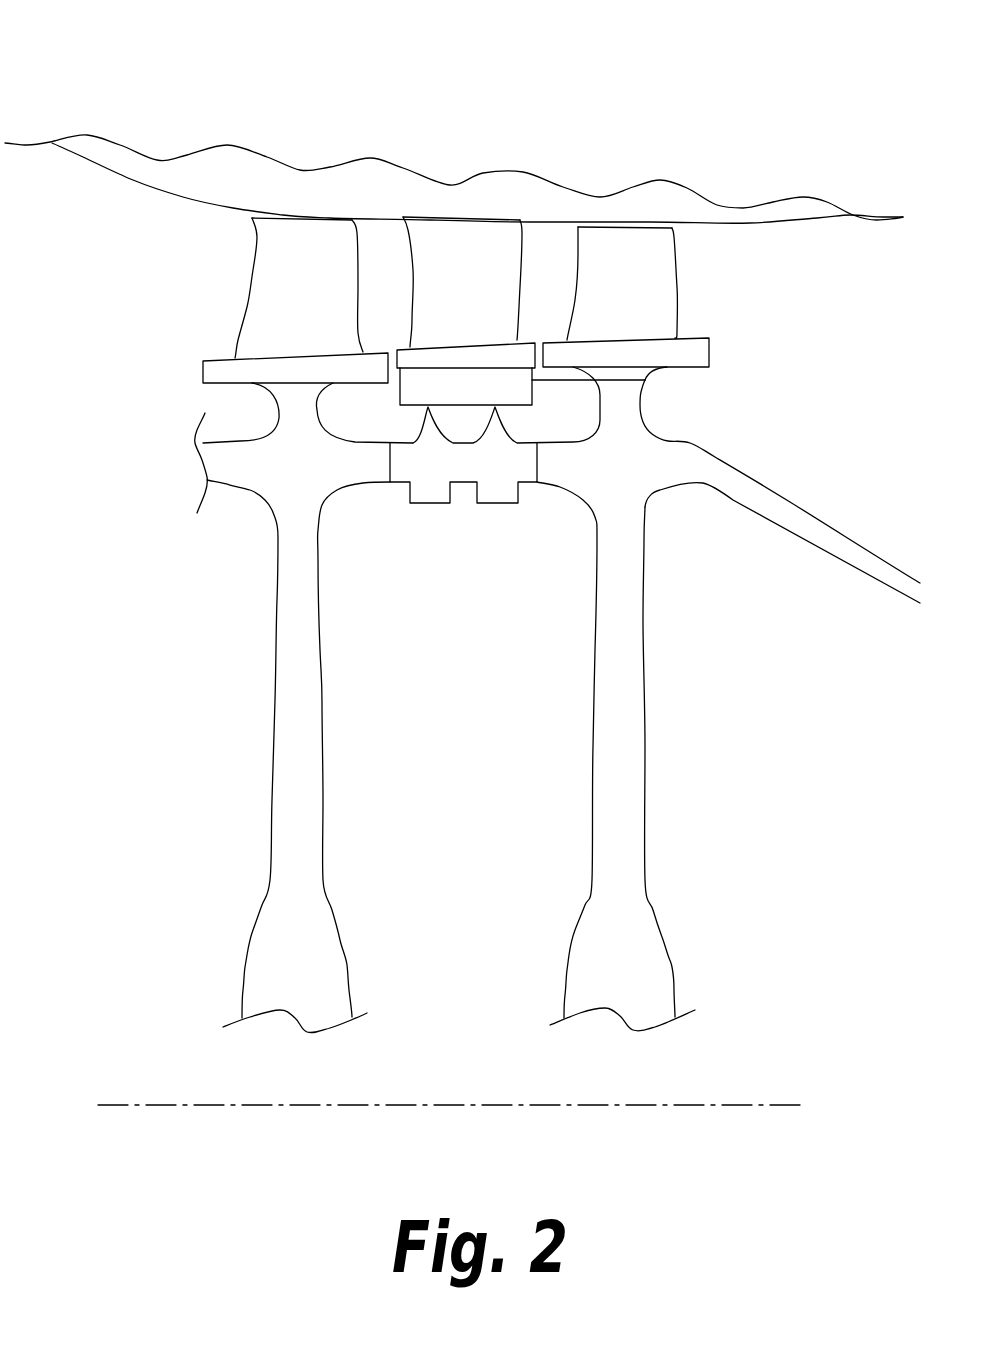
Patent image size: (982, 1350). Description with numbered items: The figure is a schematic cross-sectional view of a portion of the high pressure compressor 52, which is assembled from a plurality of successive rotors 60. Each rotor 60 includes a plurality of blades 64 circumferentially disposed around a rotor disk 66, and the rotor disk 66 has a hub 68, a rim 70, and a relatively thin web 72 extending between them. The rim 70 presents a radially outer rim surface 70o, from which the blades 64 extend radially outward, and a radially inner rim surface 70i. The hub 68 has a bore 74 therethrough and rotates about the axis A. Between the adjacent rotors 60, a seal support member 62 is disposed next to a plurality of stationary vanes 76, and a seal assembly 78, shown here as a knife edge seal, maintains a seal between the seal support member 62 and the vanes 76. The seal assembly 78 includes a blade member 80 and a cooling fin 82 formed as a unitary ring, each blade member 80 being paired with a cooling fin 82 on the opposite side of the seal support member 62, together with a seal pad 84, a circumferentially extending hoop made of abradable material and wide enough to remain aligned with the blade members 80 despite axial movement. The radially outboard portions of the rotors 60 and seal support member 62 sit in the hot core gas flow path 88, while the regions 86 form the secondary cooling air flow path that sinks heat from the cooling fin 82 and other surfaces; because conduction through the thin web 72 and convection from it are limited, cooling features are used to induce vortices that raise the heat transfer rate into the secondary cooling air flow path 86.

The high pressure compressor 52 is at (780, 78).
The blades 64 is at (250, 243).
The hot core gas flow path 88 is at (150, 316).
The seal assembly 78 is at (410, 418).
The stationary vanes 76 is at (522, 252).
The seal pad 84 is at (682, 377).
The blade member 80 is at (495, 408).
The radially outer rim surface 70o is at (238, 440).
The rim 70 is at (240, 493).
The radially inner rim surface 70i is at (352, 490).
The rotor disk 66 is at (276, 633).
The cooling fin 82 is at (490, 505).
The seal support member 62 is at (467, 570).
The secondary cooling air flow path 86 is at (150, 716).
The web 72 is at (270, 740).
The HPC rotor 60 is at (225, 802).
The hub 68 is at (245, 967).
The bore 74 is at (228, 1055).
The axis A is at (705, 1140).